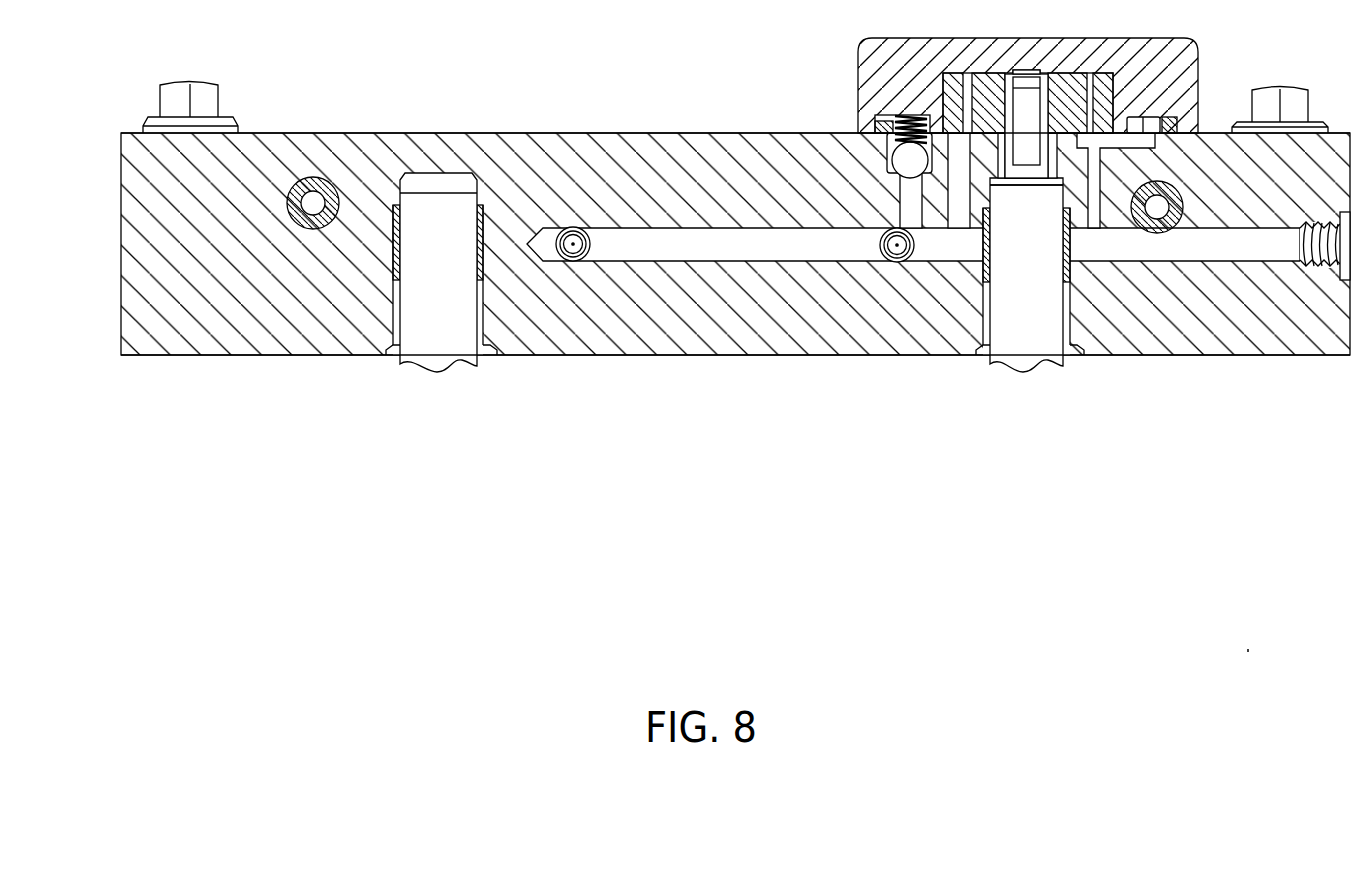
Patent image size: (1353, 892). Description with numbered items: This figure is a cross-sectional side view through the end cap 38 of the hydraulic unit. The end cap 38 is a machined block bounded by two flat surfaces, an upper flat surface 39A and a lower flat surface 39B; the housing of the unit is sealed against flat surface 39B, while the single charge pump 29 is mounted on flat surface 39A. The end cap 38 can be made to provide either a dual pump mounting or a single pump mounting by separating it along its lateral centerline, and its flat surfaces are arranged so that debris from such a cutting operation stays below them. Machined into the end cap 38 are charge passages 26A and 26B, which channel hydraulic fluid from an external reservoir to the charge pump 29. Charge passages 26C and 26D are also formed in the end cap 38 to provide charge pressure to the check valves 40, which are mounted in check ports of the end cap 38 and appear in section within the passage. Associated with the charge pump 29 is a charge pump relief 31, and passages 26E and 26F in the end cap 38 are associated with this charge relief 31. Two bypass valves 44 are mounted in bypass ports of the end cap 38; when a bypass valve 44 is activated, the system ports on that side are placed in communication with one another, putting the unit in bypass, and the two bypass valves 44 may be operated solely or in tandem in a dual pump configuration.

The end cap 38 is at (120, 228).
The flat surface 39A is at (674, 132).
The flat surface 39B is at (685, 356).
The check valve 40 is at (580, 227).
The charge passage 26A is at (1218, 259).
The charge passage 26B is at (1097, 200).
The charge passage 26C is at (960, 177).
The charge passage 26D is at (672, 255).
The passage 26E is at (910, 200).
The passage 26F is at (1150, 128).
The charge pump 29 is at (978, 78).
The charge pump relief 31 is at (888, 155).
The bypass valve 44 is at (313, 230).